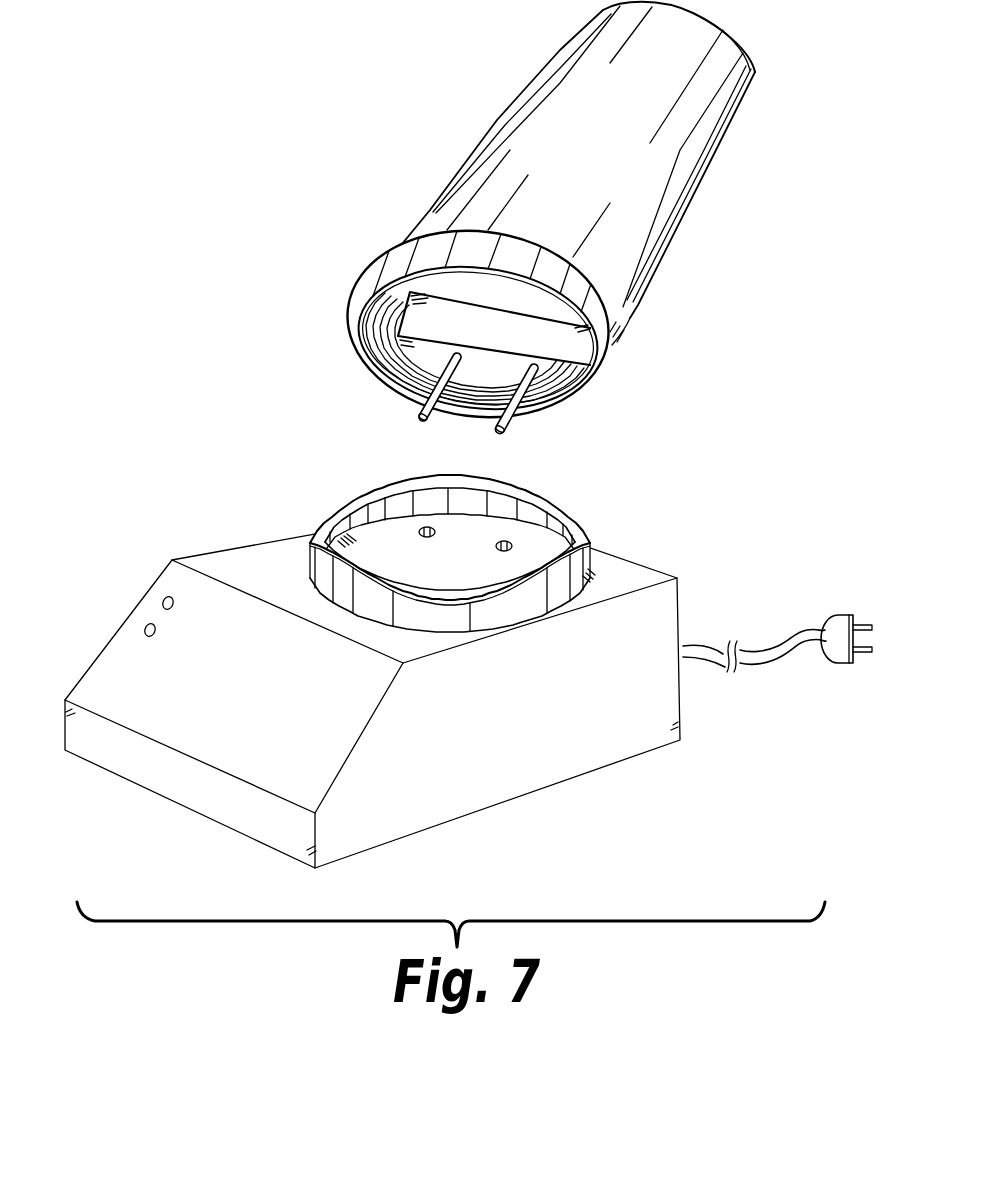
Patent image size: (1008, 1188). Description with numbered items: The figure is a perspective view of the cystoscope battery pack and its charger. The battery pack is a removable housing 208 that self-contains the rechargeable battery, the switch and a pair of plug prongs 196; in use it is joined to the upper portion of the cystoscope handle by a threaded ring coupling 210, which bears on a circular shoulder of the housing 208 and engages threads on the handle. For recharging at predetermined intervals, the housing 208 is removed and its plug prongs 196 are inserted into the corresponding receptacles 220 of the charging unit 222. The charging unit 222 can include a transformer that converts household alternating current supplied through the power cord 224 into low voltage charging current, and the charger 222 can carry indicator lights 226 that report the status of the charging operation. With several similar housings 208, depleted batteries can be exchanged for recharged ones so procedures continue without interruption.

The plug prongs 196 is at (499, 433).
The removable housing 208 is at (640, 297).
The threaded ring coupling 210 is at (625, 340).
The receptacles 220 is at (432, 530).
The charging unit 222 is at (468, 663).
The power cord 224 is at (750, 657).
The indicator lights 226 is at (325, 735).